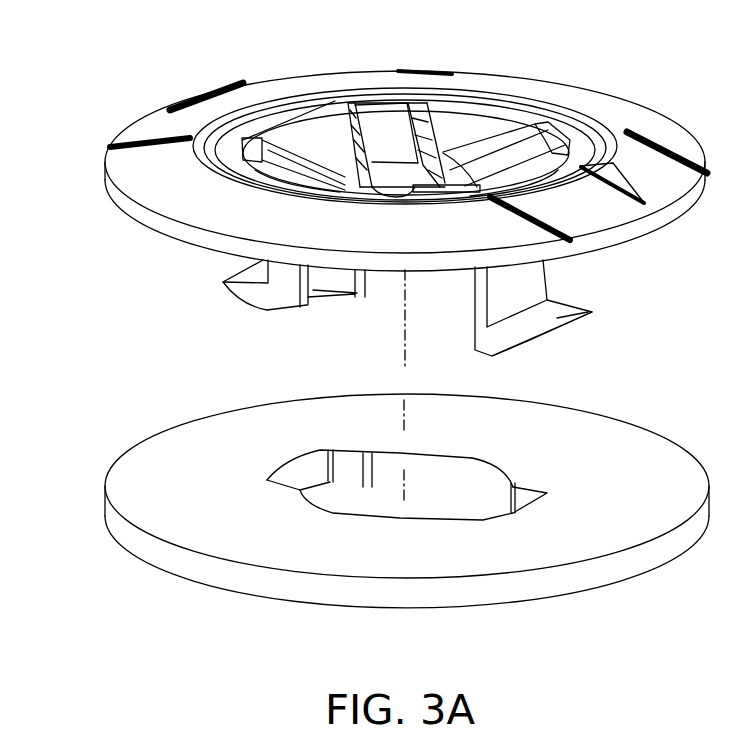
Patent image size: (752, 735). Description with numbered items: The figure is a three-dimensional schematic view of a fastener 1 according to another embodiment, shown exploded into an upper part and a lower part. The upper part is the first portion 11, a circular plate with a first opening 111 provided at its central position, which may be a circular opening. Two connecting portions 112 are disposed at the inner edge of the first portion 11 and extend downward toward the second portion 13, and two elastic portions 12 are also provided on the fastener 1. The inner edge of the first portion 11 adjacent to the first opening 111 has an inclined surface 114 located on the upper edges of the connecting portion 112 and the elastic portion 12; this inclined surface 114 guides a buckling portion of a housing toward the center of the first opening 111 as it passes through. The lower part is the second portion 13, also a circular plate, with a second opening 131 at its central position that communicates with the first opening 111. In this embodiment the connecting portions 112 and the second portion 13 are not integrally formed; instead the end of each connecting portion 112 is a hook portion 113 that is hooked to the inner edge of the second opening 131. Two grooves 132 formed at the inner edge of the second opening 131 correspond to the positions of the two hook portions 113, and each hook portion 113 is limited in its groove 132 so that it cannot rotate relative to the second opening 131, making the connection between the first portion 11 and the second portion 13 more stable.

The fastener 1 is at (75, 247).
The first portion 11 is at (230, 220).
The elastic portion 12 is at (563, 133).
The second portion 13 is at (228, 430).
The first opening 111 is at (346, 112).
The connecting portion 112 is at (477, 123).
The hook portion 113 is at (593, 311).
The inclined surface 114 is at (455, 83).
The second opening 131 is at (467, 478).
The groove 132 is at (543, 507).